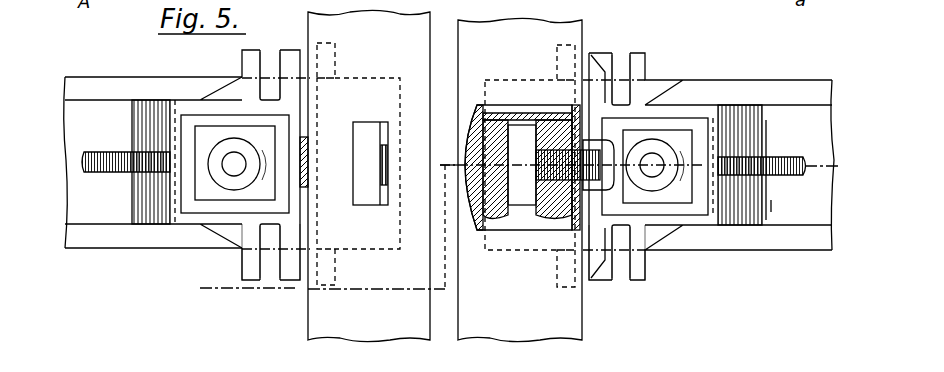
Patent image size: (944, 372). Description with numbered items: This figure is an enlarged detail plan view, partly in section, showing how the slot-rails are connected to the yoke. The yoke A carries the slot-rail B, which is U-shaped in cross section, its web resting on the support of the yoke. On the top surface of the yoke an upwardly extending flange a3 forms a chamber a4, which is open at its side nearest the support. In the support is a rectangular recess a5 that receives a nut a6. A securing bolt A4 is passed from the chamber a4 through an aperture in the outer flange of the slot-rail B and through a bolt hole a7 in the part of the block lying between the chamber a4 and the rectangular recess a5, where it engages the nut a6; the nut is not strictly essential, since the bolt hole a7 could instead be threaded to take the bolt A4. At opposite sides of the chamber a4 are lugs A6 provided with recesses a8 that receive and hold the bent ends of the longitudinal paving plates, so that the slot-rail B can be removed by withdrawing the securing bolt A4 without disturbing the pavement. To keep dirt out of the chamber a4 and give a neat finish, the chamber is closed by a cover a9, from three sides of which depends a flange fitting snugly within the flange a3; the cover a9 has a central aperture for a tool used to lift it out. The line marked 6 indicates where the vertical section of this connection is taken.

The yoke A is at (449, 165).
The slot-rail B is at (445, 175).
The section line 6- 6 is at (516, 228).
The flange a3 is at (182, 215).
The chamber a4 is at (617, 135).
The rectangular recess a5 is at (380, 123).
The nut a6 is at (370, 192).
The bolt hole a7 is at (570, 188).
The recess a8 is at (270, 88).
The cover a9 is at (207, 137).
The securing bolt A4 is at (303, 150).
The lug A6 is at (253, 262).